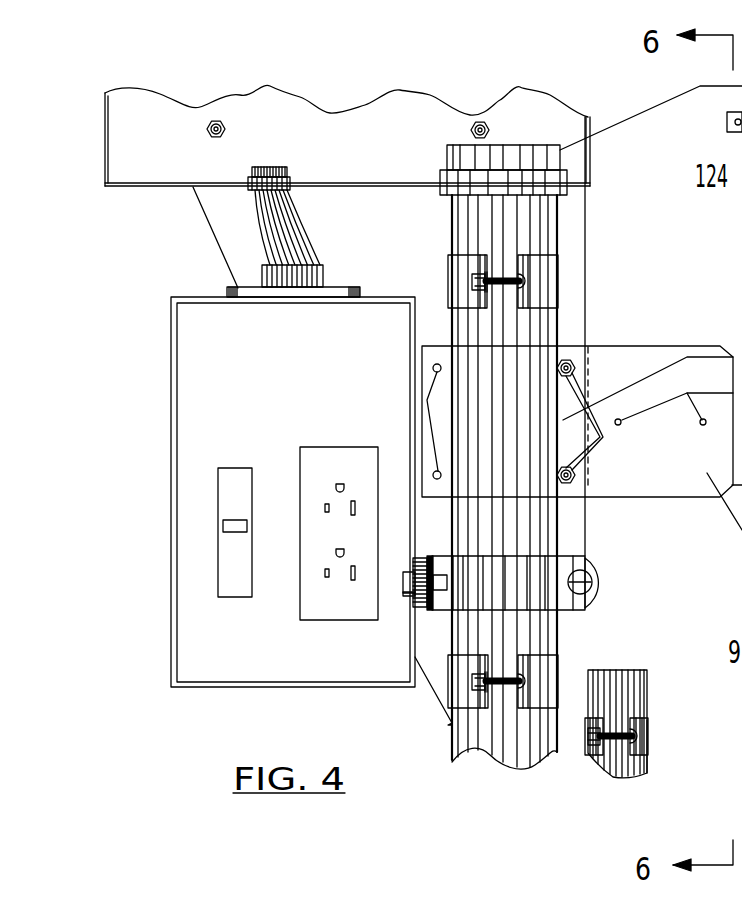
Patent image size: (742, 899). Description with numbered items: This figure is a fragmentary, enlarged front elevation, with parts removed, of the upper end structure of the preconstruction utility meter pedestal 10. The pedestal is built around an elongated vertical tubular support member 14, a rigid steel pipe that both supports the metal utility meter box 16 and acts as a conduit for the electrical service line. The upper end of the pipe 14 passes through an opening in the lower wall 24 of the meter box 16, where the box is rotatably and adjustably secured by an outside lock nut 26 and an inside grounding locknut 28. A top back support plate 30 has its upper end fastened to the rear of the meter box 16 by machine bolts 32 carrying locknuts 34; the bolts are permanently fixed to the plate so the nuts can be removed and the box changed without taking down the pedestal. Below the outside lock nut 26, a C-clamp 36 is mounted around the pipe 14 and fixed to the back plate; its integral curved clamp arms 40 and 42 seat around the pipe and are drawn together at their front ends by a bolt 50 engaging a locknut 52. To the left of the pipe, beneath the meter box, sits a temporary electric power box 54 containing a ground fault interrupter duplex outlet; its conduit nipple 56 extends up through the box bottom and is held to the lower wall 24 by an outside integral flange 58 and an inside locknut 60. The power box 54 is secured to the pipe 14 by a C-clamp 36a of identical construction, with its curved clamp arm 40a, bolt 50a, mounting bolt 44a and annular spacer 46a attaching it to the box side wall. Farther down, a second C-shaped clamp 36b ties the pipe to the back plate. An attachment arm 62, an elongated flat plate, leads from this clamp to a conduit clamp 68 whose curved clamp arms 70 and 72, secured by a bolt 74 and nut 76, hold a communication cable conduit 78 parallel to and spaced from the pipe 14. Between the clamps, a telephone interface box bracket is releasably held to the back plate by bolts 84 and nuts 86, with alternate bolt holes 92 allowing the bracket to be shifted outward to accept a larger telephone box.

The preconstruction utility meter pedestal 10 is at (156, 77).
The elongated vertical tubular support member 14 is at (506, 485).
The metal utility meter box 16 is at (347, 121).
The lower wall 24 is at (347, 121).
The outside lock nut 26 is at (568, 202).
The inside grounding locknut 28 is at (444, 188).
The top back support plate 30 is at (237, 248).
The machine bolts 32 is at (532, 92).
The locknuts 34 is at (150, 124).
The C-clamp 36 is at (563, 285).
The curved clamp arm 40 is at (413, 269).
The curved clamp arm 42 is at (586, 271).
The bolt 50 is at (591, 311).
The locknut 52 is at (470, 283).
The temporary electric power box 54 is at (251, 519).
The conduit nipple 56 is at (225, 277).
The outside integral flange 58 is at (209, 205).
The inside locknut 60 is at (279, 143).
The bolt holes 92 is at (427, 400).
The bolts 84 is at (592, 421).
The nuts 86 is at (600, 436).
The curved clamp arm 40a is at (569, 556).
The C-clamp 36a is at (597, 562).
The bolt 50a is at (645, 602).
The bolt 44a is at (339, 619).
The annular spacer 46a is at (348, 664).
The second C-shaped clamp 36b is at (475, 735).
The attachment arm 62 is at (546, 768).
The communication cable conduit 78 is at (633, 683).
The nut 76 is at (593, 737).
The curved clamp arm 70 is at (593, 742).
The curved clamp arm 72 is at (650, 737).
The bolt 74 is at (635, 735).
The conduit clamp 68 is at (650, 755).